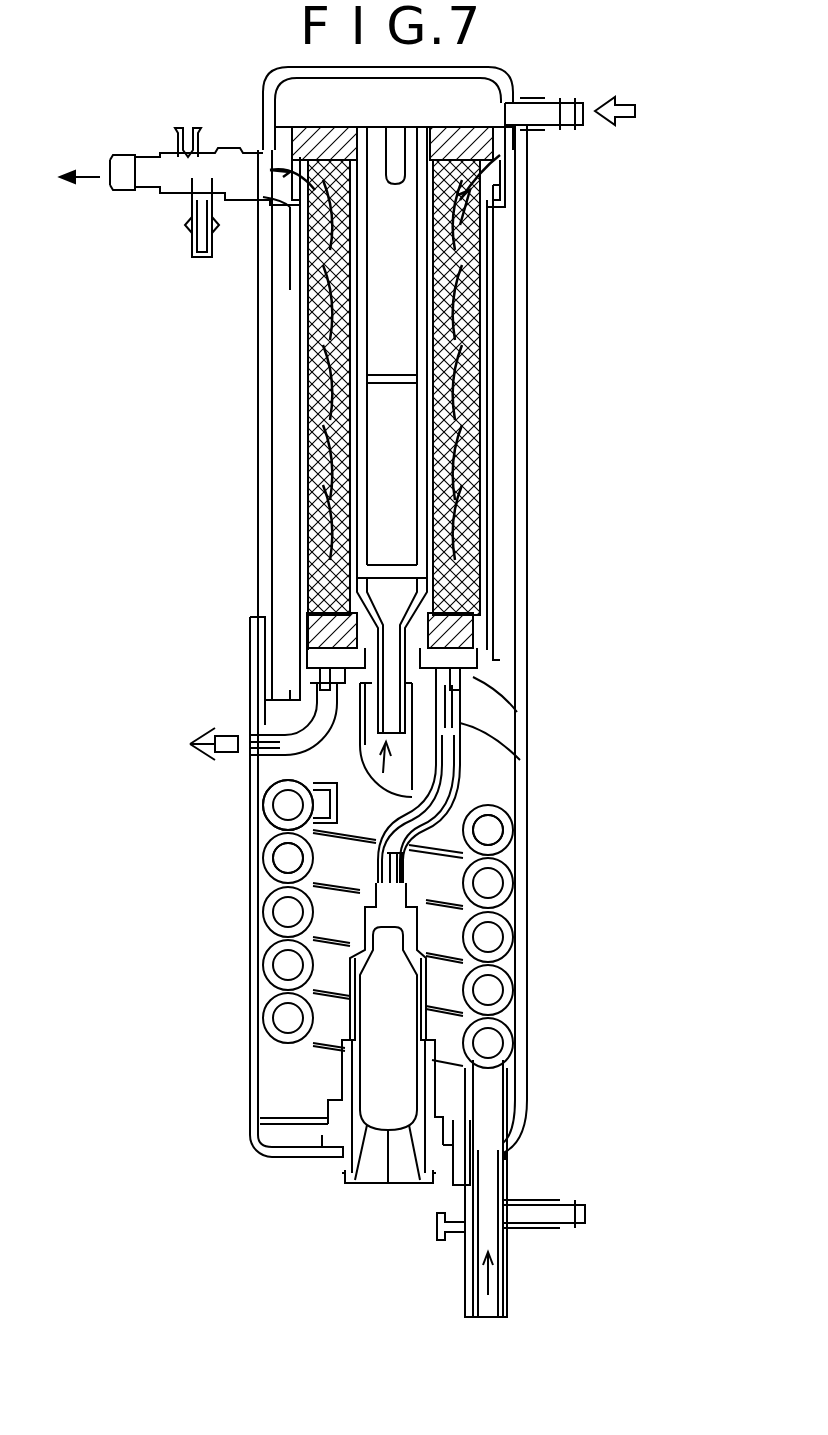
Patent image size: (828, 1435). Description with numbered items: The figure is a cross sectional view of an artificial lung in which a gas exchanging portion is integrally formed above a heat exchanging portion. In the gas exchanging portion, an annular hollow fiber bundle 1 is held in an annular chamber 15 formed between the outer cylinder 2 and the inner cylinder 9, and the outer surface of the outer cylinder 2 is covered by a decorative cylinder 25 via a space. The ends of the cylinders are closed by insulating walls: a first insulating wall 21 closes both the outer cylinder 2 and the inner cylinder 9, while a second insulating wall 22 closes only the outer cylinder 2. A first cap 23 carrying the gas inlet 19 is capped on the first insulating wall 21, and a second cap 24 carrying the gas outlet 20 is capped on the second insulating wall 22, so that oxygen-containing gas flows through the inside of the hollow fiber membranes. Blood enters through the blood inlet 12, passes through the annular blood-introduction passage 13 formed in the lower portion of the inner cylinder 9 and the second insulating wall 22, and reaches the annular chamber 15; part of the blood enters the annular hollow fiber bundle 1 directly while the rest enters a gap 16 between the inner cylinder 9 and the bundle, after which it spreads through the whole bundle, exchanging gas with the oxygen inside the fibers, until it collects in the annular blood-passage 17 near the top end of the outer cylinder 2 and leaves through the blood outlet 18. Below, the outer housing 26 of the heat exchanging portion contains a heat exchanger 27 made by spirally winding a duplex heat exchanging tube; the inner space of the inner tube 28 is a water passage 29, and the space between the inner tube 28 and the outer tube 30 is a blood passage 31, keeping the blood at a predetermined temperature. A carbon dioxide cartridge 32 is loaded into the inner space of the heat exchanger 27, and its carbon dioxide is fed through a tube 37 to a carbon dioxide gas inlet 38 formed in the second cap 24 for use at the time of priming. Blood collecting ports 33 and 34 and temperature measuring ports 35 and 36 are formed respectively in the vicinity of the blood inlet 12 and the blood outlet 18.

The annular hollow fiber bundle 1 is at (470, 430).
The outer cylinder 2 is at (300, 477).
The inner cylinder 9 is at (388, 531).
The blood inlet 12 is at (490, 1320).
The annular blood-introduction passage 13 is at (412, 612).
The annular chamber 15 is at (480, 302).
The gap 16 is at (460, 372).
The annular blood-passage 17 is at (490, 197).
The blood outlet 18 is at (130, 180).
The gas inlet 19 is at (635, 111).
The gas outlet 20 is at (185, 735).
The first insulating wall 21 is at (487, 148).
The second insulating wall 22 is at (330, 640).
The first cap 23 is at (513, 76).
The second cap 24 is at (480, 680).
The decorative cylinder 25 is at (258, 445).
The outer housing 26 is at (527, 992).
The heat exchanger 27 is at (330, 917).
The inner tube 28 is at (505, 850).
The water passage 29 is at (288, 805).
The outer tube 30 is at (490, 835).
The blood passage 31 is at (290, 862).
The carbon dioxide cartridge 32 is at (365, 1085).
The blood collecting port 33 is at (437, 1228).
The blood collecting port 34 is at (192, 117).
The temperature measuring port 35 is at (567, 1210).
The temperature measuring port 36 is at (200, 243).
The tube 37 is at (468, 768).
The carbon dioxide gas inlet 38 is at (456, 722).